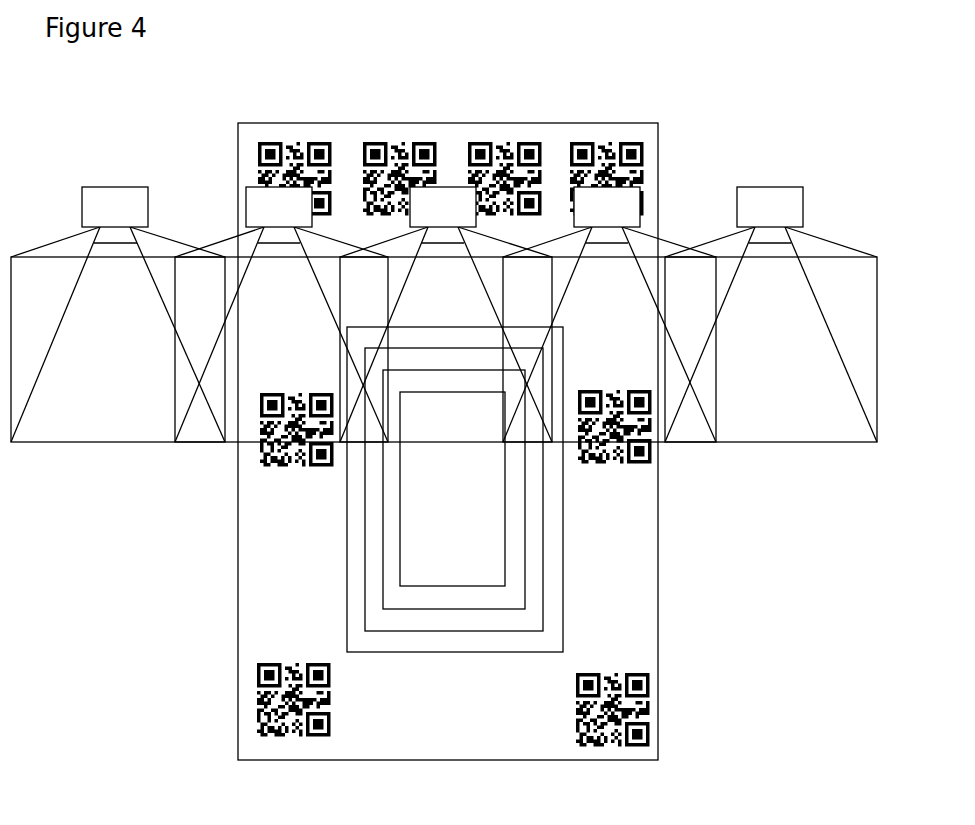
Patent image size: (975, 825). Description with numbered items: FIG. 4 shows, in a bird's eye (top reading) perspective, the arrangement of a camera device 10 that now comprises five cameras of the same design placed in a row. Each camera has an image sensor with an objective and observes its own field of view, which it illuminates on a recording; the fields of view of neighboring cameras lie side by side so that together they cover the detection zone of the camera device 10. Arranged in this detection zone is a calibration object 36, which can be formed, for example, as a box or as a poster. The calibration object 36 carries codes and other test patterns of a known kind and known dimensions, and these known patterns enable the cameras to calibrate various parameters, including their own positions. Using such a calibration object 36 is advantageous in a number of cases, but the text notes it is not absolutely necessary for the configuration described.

The camera device 10 is at (467, 383).
The calibration object 36 is at (411, 441).